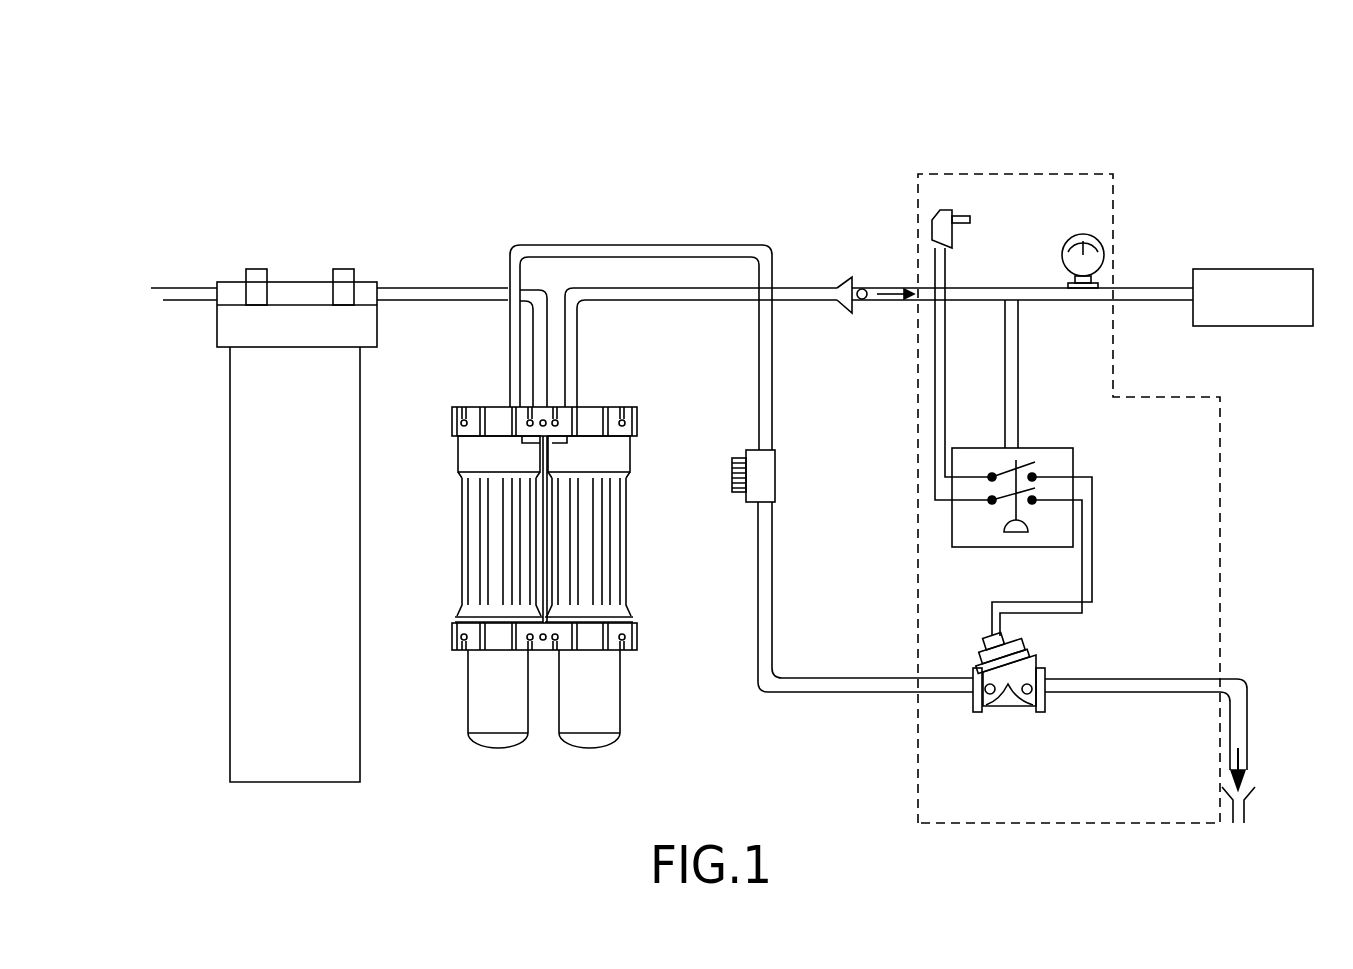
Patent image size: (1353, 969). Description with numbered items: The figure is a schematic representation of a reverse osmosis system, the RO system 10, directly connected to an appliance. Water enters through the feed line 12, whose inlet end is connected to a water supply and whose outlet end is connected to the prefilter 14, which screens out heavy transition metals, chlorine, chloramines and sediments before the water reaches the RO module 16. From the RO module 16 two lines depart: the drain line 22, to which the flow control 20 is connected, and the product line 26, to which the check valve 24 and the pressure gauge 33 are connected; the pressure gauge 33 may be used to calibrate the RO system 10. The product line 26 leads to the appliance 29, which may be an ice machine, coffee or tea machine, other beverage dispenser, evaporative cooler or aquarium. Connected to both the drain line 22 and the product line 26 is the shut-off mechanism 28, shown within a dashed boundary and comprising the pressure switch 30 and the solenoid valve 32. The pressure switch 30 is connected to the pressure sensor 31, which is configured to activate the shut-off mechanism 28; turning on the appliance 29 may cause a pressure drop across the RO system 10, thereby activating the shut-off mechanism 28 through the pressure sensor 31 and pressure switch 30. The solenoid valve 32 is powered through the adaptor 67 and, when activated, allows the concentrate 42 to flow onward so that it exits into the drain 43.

The RO system 10 is at (678, 142).
The feed line 12 is at (181, 284).
The prefilter 14 is at (232, 528).
The RO module 16 is at (593, 538).
The flow control 20 is at (762, 478).
The drain line 22 is at (555, 246).
The check valve 24 is at (843, 272).
The product line 26 is at (797, 286).
The shut-off mechanism 28 is at (1221, 610).
The appliance 29 is at (1268, 311).
The pressure switch 30 is at (1068, 447).
The pressure sensor 31 is at (1011, 533).
The solenoid valve 32 is at (1033, 659).
The pressure gauge 33 is at (1100, 242).
The concentrate 42 is at (1241, 758).
The drain 43 is at (1245, 806).
The adaptor 67 is at (957, 210).